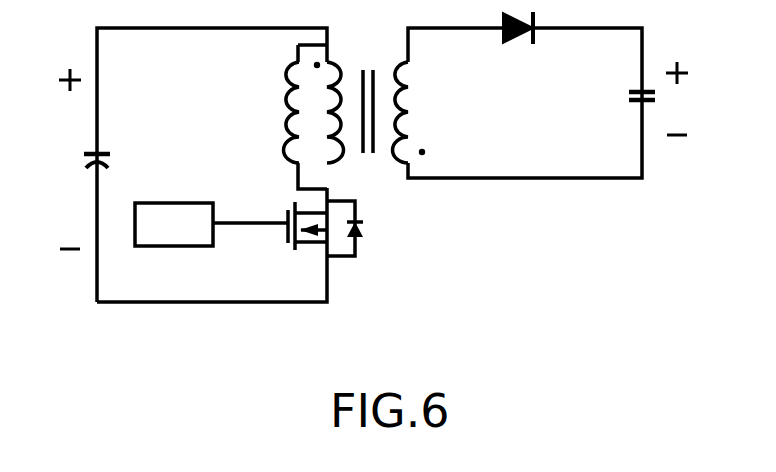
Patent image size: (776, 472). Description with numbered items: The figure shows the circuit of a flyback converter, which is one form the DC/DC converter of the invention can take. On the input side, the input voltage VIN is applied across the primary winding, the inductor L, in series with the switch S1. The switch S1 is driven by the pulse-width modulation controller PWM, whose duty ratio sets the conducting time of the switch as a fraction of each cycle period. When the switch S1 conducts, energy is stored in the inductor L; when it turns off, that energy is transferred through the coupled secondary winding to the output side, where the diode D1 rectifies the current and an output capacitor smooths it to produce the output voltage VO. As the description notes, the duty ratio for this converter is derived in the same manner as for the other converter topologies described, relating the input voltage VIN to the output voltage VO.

The inductor L is at (288, 112).
The diode D1 is at (521, 48).
The switch S1 is at (308, 233).
The pulse-width modulation controller PWM is at (174, 224).
The input voltage VIN is at (71, 159).
The output voltage VO is at (685, 98).